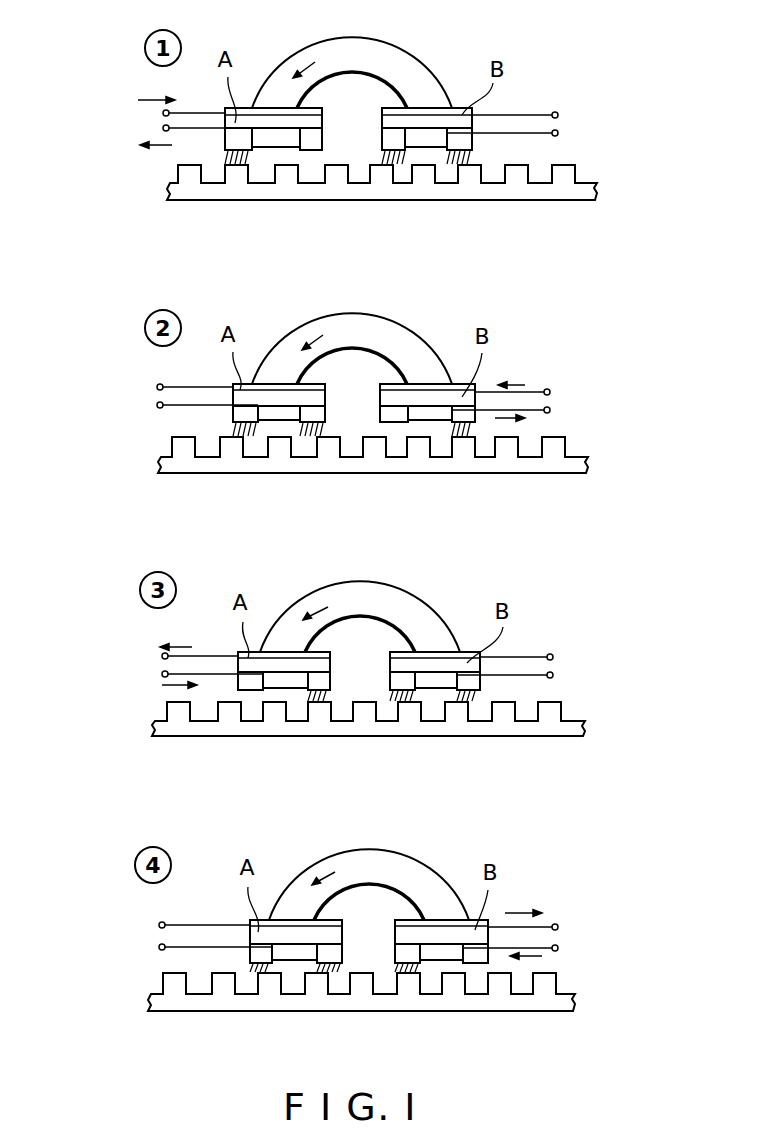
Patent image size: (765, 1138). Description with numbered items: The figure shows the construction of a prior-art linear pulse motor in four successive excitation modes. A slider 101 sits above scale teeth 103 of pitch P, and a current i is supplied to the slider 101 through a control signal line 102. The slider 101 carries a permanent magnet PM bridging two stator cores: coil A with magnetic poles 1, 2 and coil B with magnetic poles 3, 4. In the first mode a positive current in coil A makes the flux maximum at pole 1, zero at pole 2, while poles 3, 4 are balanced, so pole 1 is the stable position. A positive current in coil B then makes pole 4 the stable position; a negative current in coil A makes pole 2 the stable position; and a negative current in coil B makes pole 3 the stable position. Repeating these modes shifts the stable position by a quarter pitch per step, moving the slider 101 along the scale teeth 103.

The slider 101 is at (413, 55).
The control signal line 102 is at (160, 113).
The scale teeth 103 is at (570, 168).
The magnetic pole 1 is at (262, 960).
The magnetic pole 2 is at (321, 546).
The magnetic pole 3 is at (400, 548).
The magnetic pole 4 is at (467, 545).